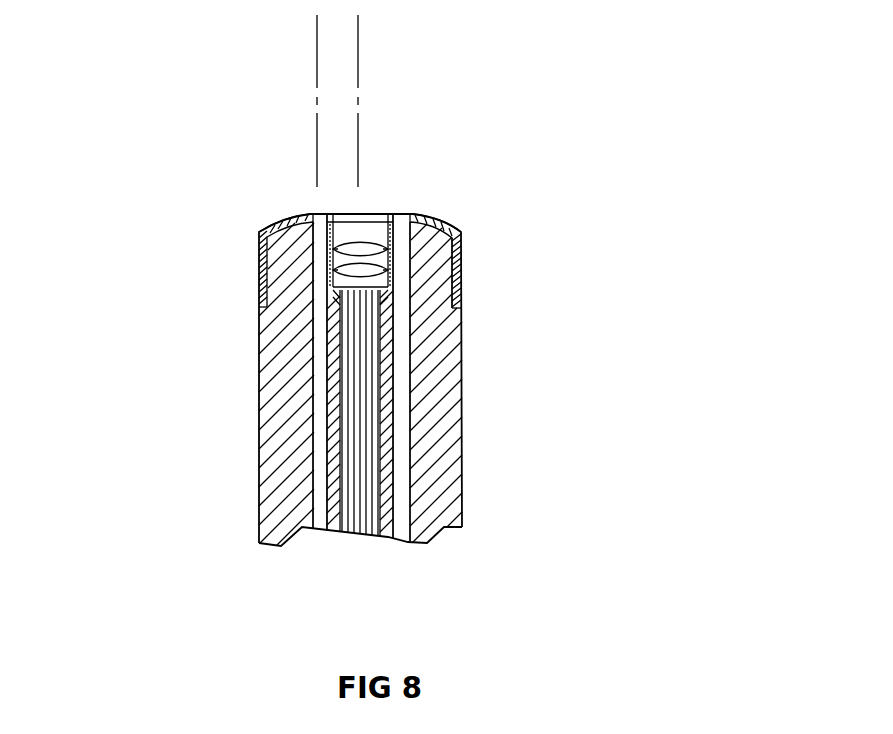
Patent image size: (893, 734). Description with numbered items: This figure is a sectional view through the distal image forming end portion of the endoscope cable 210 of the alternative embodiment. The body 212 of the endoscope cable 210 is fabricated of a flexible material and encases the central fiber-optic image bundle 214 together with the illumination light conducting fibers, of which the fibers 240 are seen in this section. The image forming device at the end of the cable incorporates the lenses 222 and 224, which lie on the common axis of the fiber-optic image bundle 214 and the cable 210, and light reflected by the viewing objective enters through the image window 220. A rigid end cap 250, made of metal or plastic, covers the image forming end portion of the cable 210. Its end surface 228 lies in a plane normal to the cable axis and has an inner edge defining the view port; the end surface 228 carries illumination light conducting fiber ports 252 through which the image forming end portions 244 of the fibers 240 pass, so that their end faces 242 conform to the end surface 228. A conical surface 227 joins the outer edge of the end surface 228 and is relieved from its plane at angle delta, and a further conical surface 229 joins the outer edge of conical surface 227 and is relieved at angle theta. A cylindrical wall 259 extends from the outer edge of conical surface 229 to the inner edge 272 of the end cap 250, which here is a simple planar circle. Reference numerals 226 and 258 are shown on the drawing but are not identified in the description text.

The endoscope cable 210 is at (549, 421).
The body 212 is at (290, 485).
The central fiber-optic image bundle 214 is at (355, 410).
The image window 220 is at (350, 213).
The lens 222 is at (328, 290).
The lens 224 is at (318, 405).
The annular gap 226 is at (418, 310).
The conical surface 227 is at (418, 222).
The end surface 228 is at (412, 213).
The conical surface 229 is at (452, 228).
The illumination light conducting fiber 240 is at (462, 523).
The end face 242 is at (318, 213).
The image forming end portion 244 is at (258, 238).
The end cap 250 is at (472, 265).
The illumination light conducting fiber port 252 is at (402, 213).
The optical fiber 258 is at (373, 213).
The cylindrical wall 259 is at (463, 287).
The inner edge 272 is at (330, 252).